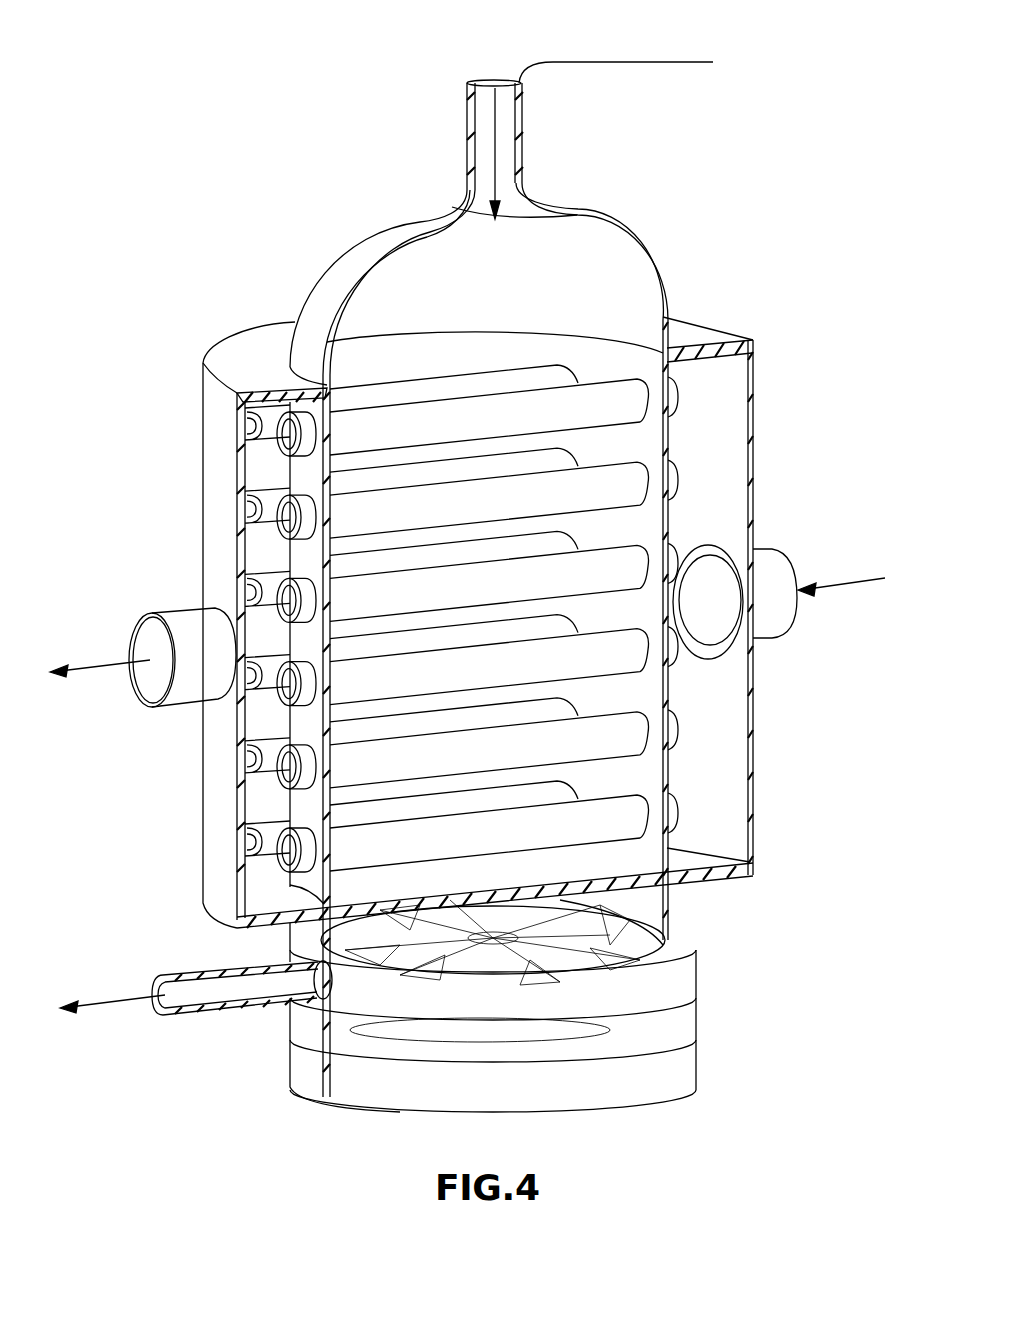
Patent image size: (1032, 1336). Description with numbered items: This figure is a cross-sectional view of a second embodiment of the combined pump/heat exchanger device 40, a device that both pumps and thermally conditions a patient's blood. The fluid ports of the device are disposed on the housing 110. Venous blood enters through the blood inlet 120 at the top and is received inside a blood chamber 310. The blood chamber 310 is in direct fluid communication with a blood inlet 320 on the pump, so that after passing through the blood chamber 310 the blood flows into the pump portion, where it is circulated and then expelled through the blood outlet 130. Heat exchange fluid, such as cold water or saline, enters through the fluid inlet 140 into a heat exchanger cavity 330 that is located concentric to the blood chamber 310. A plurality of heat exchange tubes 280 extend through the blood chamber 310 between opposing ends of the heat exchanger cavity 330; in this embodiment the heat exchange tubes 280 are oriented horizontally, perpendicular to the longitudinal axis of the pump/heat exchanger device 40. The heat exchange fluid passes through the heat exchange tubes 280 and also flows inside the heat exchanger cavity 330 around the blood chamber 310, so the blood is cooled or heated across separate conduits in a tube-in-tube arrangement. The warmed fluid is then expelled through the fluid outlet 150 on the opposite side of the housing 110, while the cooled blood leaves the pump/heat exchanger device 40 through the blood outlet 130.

The pump/heat exchanger device 40 is at (803, 148).
The housing 110 is at (632, 247).
The blood inlet 120 is at (600, 62).
The blood outlet 130 is at (103, 1006).
The fluid inlet 140 is at (855, 584).
The fluid outlet 150 is at (93, 672).
The heat exchange tubes 280 is at (637, 567).
The blood chamber 310 is at (363, 307).
The blood inlet on the pump 320 is at (328, 893).
The heat exchanger cavity 330 is at (727, 718).